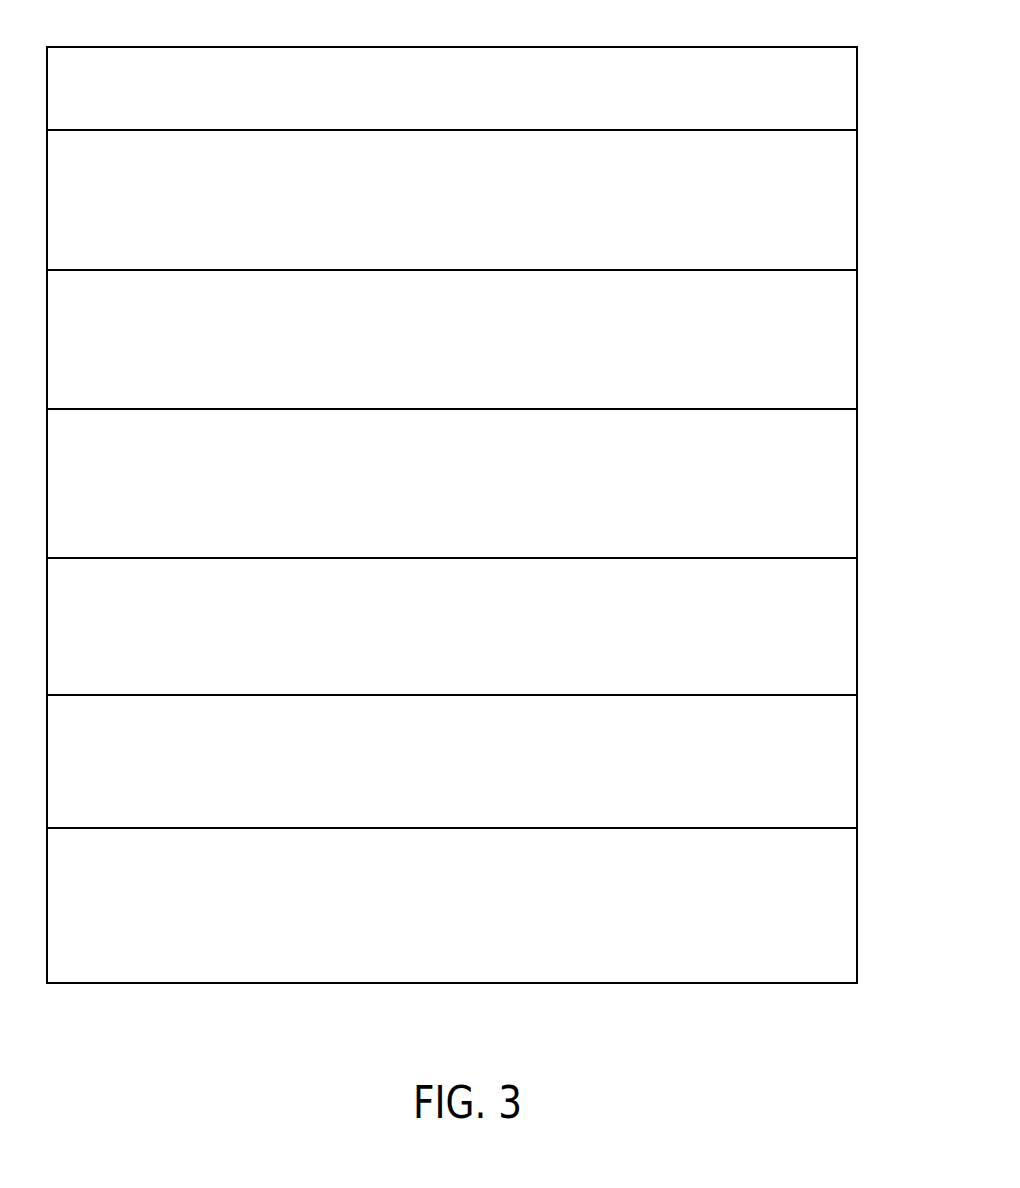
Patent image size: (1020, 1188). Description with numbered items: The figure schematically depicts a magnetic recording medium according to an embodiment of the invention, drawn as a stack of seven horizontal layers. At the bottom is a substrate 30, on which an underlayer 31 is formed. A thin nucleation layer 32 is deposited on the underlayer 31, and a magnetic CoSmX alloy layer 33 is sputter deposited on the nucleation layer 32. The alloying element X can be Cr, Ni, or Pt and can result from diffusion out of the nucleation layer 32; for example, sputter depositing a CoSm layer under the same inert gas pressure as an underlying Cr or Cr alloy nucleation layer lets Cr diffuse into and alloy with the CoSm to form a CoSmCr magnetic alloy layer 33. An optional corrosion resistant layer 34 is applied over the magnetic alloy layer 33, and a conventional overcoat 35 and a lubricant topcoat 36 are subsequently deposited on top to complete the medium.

The substrate 30 is at (858, 912).
The underlayer 31 is at (858, 773).
The nucleation layer 32 is at (858, 633).
The CoSmX magnetic alloy layer 33 is at (858, 490).
The corrosion resistant layer 34 is at (858, 348).
The overcoat 35 is at (858, 213).
The lubricant topcoat 36 is at (858, 96).